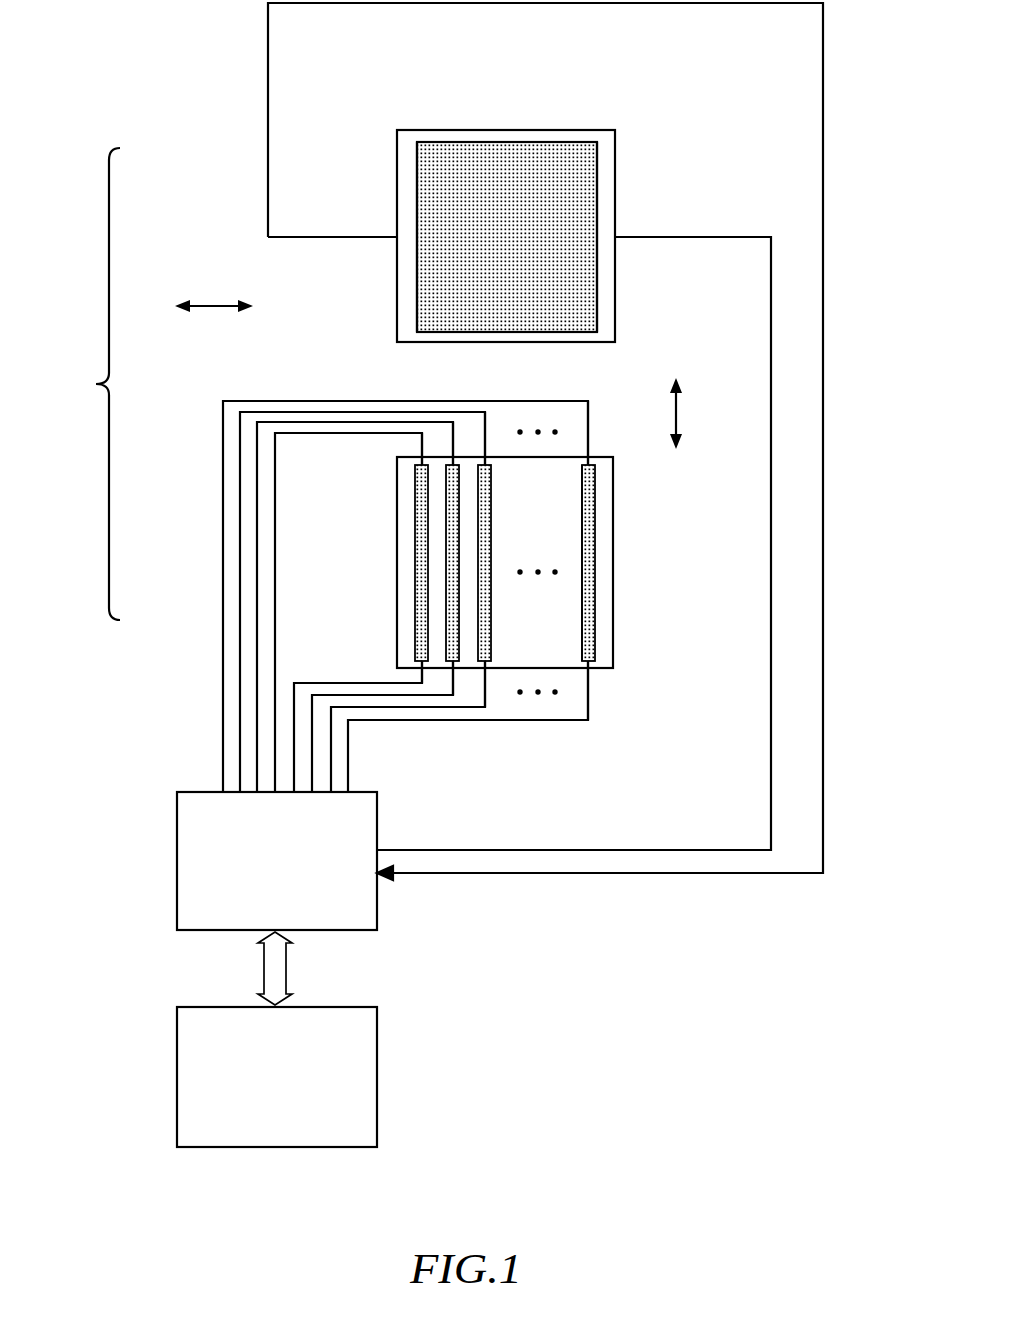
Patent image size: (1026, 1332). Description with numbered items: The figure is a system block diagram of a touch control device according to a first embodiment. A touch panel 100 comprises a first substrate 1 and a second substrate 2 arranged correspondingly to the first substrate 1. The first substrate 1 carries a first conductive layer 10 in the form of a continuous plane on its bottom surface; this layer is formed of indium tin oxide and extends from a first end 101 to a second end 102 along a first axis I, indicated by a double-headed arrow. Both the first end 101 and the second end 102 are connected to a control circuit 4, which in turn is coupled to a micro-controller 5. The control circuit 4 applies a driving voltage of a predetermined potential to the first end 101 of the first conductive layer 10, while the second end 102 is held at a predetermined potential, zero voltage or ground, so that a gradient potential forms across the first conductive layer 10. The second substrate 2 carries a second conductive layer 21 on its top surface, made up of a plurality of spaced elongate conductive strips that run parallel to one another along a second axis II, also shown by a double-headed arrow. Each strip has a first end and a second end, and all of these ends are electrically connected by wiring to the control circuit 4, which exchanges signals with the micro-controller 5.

The touch panel 100 is at (75, 384).
The first substrate 1 is at (585, 138).
The first conductive layer 10 is at (537, 160).
The first end 101 is at (597, 189).
The second end 102 is at (417, 197).
The second substrate 2 is at (611, 498).
The second conductive layer 21 is at (598, 565).
The control circuit 4 is at (190, 808).
The micro-controller 5 is at (190, 1025).
The first axis I is at (212, 302).
The second axis II is at (680, 410).